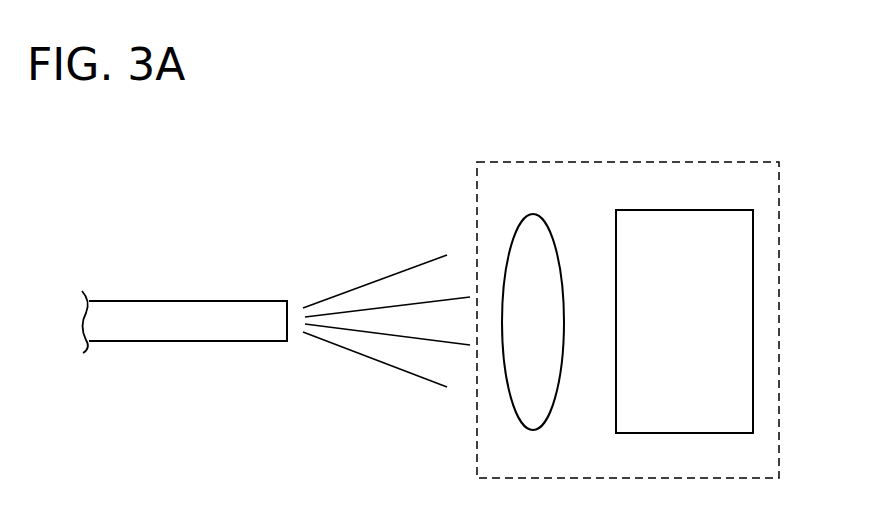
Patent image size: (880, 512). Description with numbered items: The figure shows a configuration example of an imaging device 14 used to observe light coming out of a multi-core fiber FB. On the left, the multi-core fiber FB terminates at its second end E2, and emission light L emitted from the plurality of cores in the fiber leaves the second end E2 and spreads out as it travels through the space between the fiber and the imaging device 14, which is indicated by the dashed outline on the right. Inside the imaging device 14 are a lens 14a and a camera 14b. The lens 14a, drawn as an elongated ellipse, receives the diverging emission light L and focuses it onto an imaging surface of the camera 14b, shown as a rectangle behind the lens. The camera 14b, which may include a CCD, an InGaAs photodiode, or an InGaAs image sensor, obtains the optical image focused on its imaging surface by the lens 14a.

The multi-core fiber FB is at (188, 300).
The second end E2 is at (291, 343).
The emission light L is at (370, 262).
The imaging device 14 is at (722, 162).
The lens 14a is at (533, 212).
The camera 14b is at (684, 210).